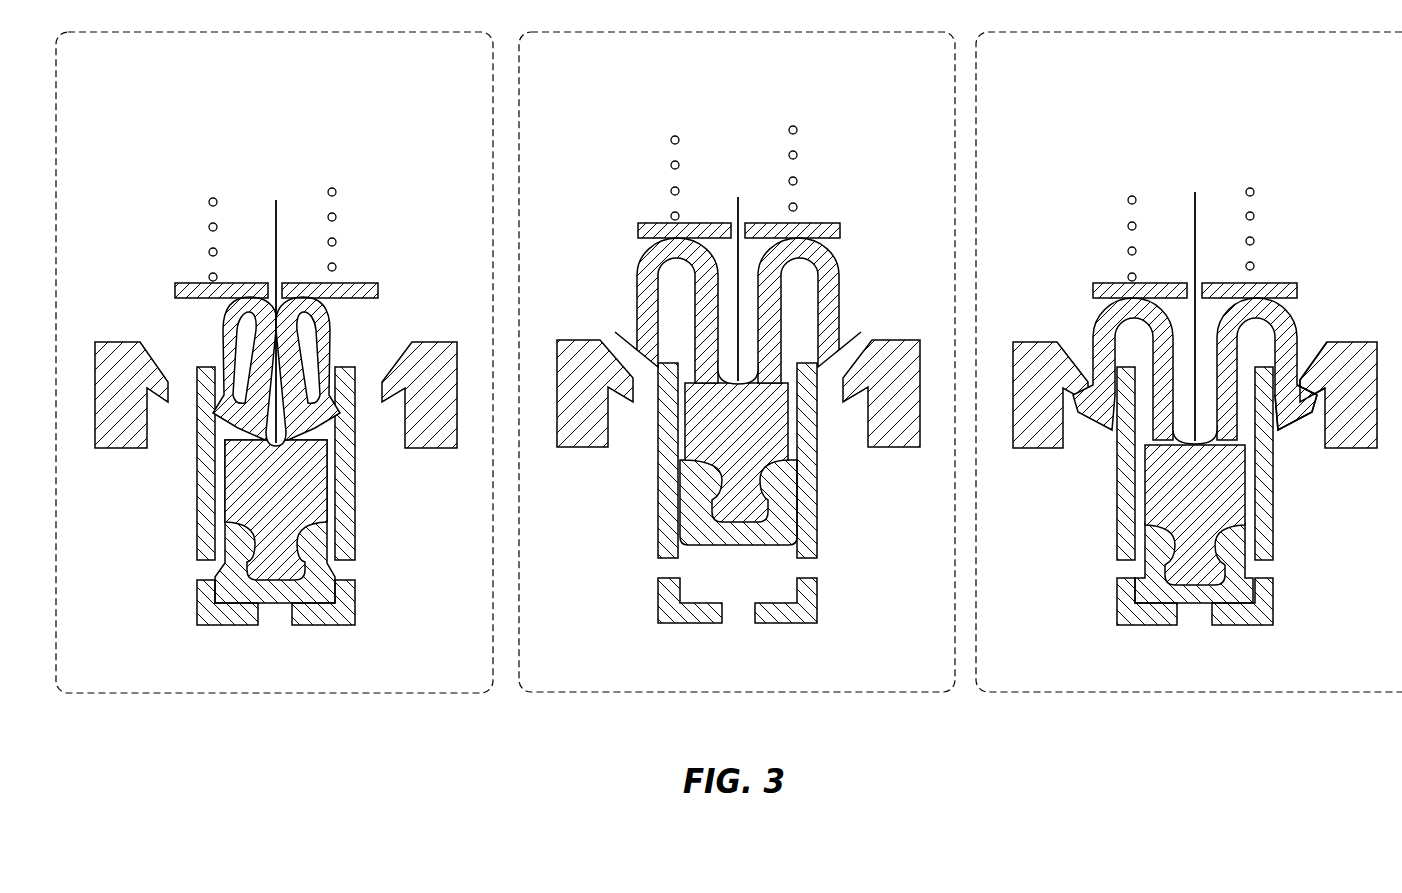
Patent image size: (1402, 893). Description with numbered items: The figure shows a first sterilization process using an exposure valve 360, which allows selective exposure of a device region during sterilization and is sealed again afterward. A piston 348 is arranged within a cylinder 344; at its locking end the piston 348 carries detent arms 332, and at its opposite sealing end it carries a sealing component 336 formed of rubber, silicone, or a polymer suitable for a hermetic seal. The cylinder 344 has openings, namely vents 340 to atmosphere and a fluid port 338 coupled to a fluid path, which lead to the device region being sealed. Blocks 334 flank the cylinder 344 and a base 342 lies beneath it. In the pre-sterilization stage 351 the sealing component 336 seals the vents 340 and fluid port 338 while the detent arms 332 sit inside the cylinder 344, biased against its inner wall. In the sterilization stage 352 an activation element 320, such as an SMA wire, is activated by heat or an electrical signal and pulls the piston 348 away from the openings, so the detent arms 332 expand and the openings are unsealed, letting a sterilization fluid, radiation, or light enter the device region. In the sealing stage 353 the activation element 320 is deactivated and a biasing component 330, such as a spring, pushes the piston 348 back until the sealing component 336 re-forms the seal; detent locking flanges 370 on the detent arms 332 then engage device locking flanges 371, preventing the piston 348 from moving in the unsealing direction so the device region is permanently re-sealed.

The activation element 320 is at (274, 193).
The biasing component 330 is at (204, 250).
The detent arms 332 is at (333, 340).
The clamp blocks 334 is at (436, 455).
The sealing component 336 is at (320, 597).
The fluid port 338 is at (271, 615).
The vents 340 is at (734, 512).
The base 342 is at (360, 622).
The cylinder 344 is at (196, 512).
The piston 348 is at (303, 505).
The pre-sterilization stage 351 is at (298, 67).
The sterilization stage 352 is at (761, 67).
The sealing stage 353 is at (1217, 67).
The exposure valve 360 is at (372, 150).
The detent locking flanges 370 is at (1288, 437).
The device locking flanges 371 is at (1318, 393).